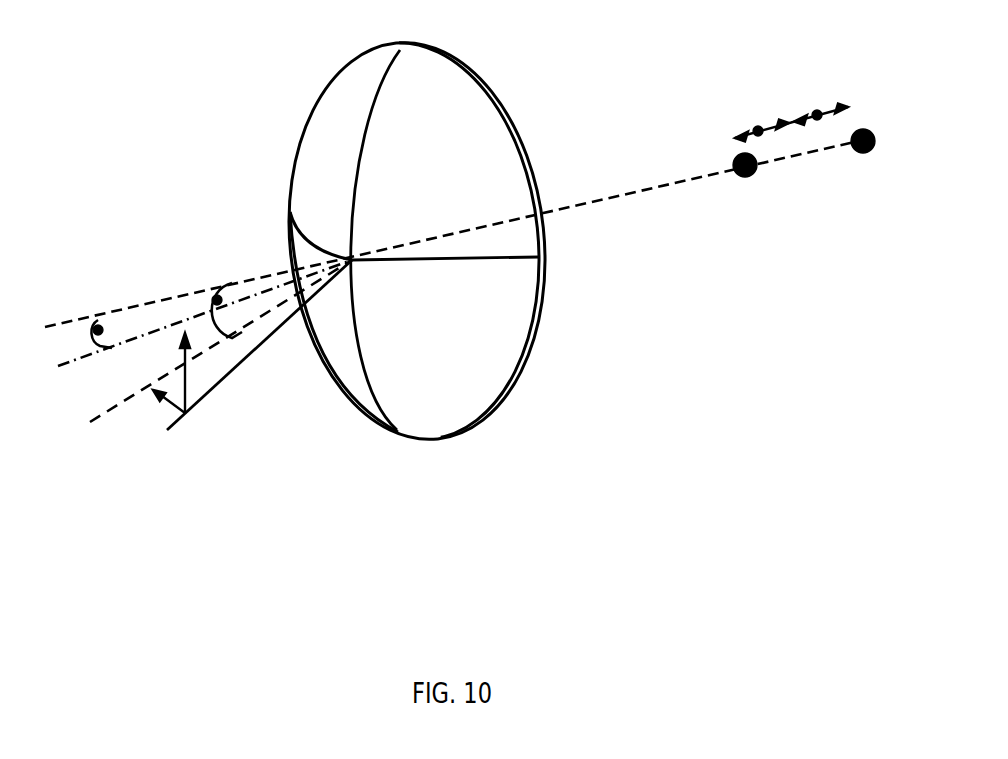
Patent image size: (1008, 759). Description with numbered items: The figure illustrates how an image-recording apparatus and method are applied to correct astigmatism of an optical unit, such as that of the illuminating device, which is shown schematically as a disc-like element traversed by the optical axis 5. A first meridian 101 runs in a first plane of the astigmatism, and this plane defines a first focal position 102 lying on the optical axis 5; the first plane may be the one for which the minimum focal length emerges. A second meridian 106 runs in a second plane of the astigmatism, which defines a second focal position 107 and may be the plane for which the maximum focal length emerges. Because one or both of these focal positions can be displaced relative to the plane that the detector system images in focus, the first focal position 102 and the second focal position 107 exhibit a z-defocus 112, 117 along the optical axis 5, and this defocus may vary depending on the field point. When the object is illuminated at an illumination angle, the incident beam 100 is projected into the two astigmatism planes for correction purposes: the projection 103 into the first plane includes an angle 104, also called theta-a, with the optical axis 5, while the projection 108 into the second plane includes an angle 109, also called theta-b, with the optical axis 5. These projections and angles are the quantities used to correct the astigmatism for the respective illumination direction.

The optical axis 5 is at (662, 180).
The incident ray 100 is at (249, 360).
The first meridian 101 is at (362, 146).
The first focal position 102 is at (752, 176).
The projection of the beam into the first plane 103 is at (105, 419).
The angle 104 is at (216, 296).
The second meridian 106 is at (434, 266).
The second focal position 107 is at (856, 152).
The projection of the beam into the second plane 108 is at (80, 366).
The angle 109 is at (100, 318).
The z-defocus 112 is at (757, 126).
The z-defocus 117 is at (816, 110).